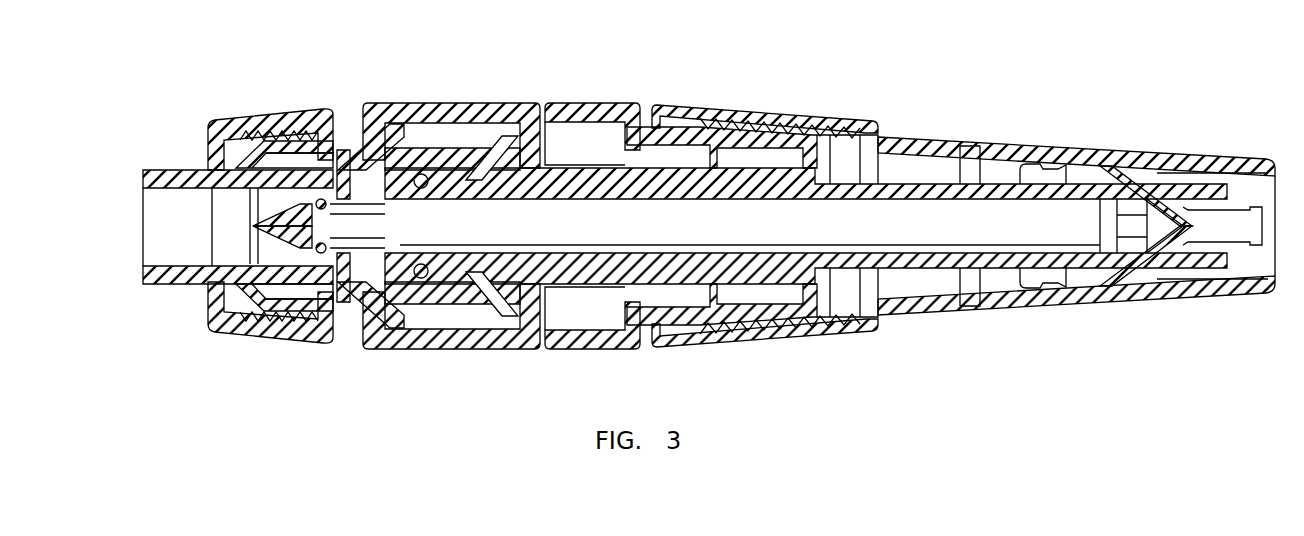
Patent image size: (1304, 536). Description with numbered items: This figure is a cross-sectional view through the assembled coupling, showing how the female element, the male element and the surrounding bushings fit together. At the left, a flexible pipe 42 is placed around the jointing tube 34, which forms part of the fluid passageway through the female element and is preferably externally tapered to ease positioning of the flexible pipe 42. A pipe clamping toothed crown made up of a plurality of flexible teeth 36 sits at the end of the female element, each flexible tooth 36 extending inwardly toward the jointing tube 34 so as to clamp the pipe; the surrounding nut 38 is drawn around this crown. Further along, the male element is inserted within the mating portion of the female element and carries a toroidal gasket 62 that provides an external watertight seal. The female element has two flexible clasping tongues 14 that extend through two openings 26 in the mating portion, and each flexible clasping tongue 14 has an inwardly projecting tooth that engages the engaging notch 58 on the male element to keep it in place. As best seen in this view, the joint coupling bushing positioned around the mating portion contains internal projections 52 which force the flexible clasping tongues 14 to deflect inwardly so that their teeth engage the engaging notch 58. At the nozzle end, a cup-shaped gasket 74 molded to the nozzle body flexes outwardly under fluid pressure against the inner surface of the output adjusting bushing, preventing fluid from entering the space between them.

The flexible clasping tongue 14 is at (450, 152).
The opening 26 is at (488, 166).
The jointing tube 34 is at (271, 190).
The flexible tooth 36 is at (232, 152).
The nut 38 is at (219, 160).
The flexible pipe 42 is at (190, 167).
The internal projection 52 is at (503, 318).
The engaging notch 58 is at (474, 172).
The toroidal gasket 62 is at (424, 278).
The cup-shaped gasket 74 is at (1037, 166).